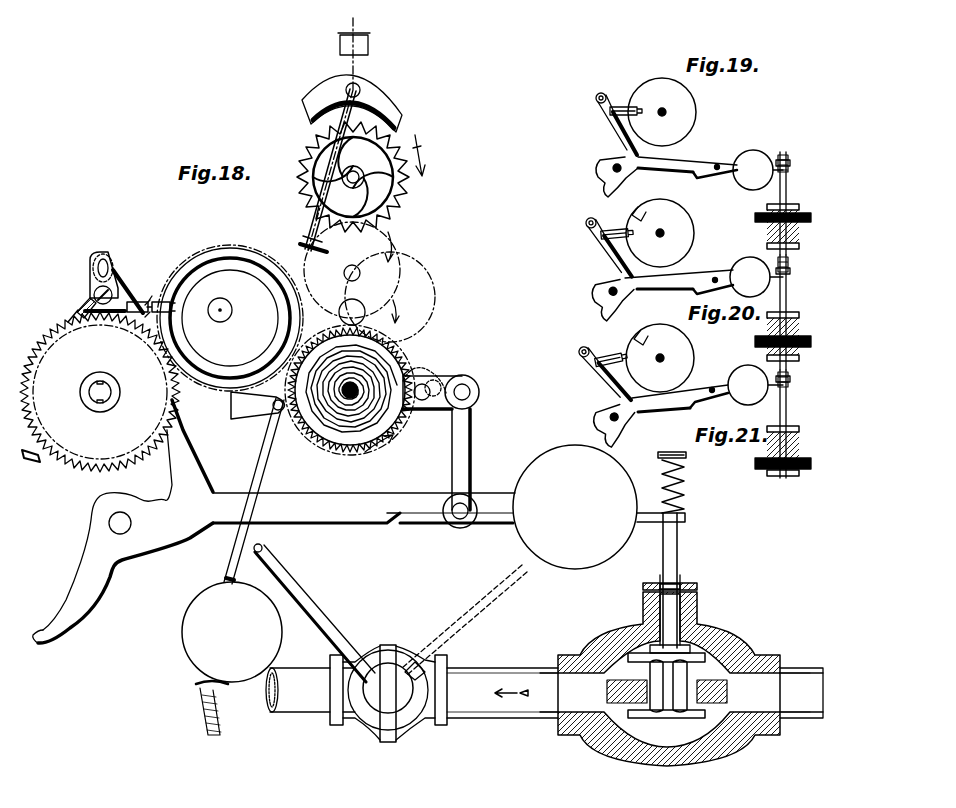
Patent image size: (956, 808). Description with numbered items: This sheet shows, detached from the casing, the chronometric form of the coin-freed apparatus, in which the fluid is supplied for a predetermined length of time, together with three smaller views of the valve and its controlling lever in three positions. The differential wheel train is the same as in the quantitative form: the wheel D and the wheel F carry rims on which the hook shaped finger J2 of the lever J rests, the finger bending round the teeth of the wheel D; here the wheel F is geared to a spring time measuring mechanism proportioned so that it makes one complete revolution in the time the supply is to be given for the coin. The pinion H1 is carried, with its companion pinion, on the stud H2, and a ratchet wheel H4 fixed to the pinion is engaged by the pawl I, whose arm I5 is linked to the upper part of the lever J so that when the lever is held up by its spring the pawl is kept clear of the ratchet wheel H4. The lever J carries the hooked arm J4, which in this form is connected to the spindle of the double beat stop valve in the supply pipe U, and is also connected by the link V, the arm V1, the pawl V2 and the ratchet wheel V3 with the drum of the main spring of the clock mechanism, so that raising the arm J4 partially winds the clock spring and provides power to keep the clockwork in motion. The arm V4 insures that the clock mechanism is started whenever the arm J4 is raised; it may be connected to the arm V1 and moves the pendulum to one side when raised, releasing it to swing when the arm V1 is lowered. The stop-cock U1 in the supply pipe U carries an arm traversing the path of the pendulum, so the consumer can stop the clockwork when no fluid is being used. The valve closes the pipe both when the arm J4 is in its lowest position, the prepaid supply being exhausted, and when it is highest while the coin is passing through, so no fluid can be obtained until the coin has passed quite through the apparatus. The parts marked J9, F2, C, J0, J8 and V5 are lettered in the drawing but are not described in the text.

In FIG. 18, the arm I5 is at (92, 255).
In FIG. 18, the slot J9 is at (97, 270).
In FIG. 18, the pawl I is at (76, 300).
In FIG. 18, the hook shaped projecting part or finger J2 is at (140, 300).
In FIG. 19, the hook shaped projecting part or finger J2 is at (622, 105).
In FIG. 20, the hook shaped projecting part or finger J2 is at (615, 218).
In FIG. 21, the hook shaped projecting part or finger J2 is at (607, 344).
In FIG. 18, the wheel F is at (230, 318).
In FIG. 18, the stud F2 is at (169, 313).
In FIG. 18, the shaft C is at (235, 300).
In FIG. 18, the pinion H1 is at (100, 392).
In FIG. 18, the stud H2 is at (111, 392).
In FIG. 18, the ratchet wheel H4 is at (26, 456).
In FIG. 18, the lever J is at (168, 450).
In FIG. 19, the lever J is at (616, 140).
In FIG. 20, the lever J is at (607, 248).
In FIG. 21, the lever J is at (603, 374).
In FIG. 18, the lever handle J0 is at (96, 560).
In FIG. 19, the lever handle J0 is at (597, 173).
In FIG. 20, the lever handle J0 is at (605, 300).
In FIG. 21, the lever handle J0 is at (608, 427).
In FIG. 18, the hooked arm J4 is at (350, 496).
In FIG. 19, the hooked arm J4 is at (692, 160).
In FIG. 20, the hooked arm J4 is at (692, 276).
In FIG. 21, the hooked arm J4 is at (680, 415).
In FIG. 18, the float ball J8 is at (519, 560).
In FIG. 18, the link V is at (472, 434).
In FIG. 18, the arm V1 is at (445, 378).
In FIG. 18, the pawl V2 is at (404, 372).
In FIG. 19, the pawl V2 is at (800, 232).
In FIG. 20, the pawl V2 is at (799, 316).
In FIG. 21, the pawl V2 is at (799, 434).
In FIG. 18, the ratchet wheel V3 is at (310, 440).
In FIG. 18, the arm V4 is at (398, 278).
In FIG. 18, the rod V5 is at (298, 585).
In FIG. 18, the supply pipe U is at (474, 712).
In FIG. 18, the stop-cock U1 is at (365, 722).
In FIG. 19, the wheel D is at (662, 112).
In FIG. 20, the wheel D is at (660, 233).
In FIG. 21, the wheel D is at (660, 358).